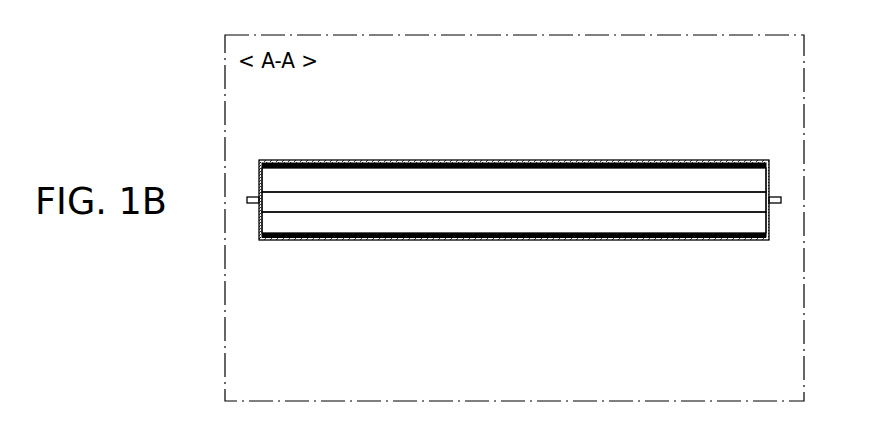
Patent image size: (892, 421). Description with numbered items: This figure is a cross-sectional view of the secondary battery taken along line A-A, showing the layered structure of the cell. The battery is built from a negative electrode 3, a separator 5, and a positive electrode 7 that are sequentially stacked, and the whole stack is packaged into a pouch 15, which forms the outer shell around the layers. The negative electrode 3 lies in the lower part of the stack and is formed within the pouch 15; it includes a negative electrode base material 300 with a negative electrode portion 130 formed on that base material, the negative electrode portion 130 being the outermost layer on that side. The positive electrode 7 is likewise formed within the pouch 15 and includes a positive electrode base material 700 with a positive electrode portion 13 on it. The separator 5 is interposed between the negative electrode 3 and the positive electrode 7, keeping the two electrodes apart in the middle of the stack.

The positive electrode 7 is at (514, 121).
The positive electrode base material 700 is at (722, 87).
The positive electrode portion 13 is at (703, 161).
The negative electrode 3 is at (514, 303).
The negative electrode base material 300 is at (596, 222).
The negative electrode portion 130 is at (695, 240).
The separator 5 is at (467, 203).
The pouch 15 is at (295, 240).